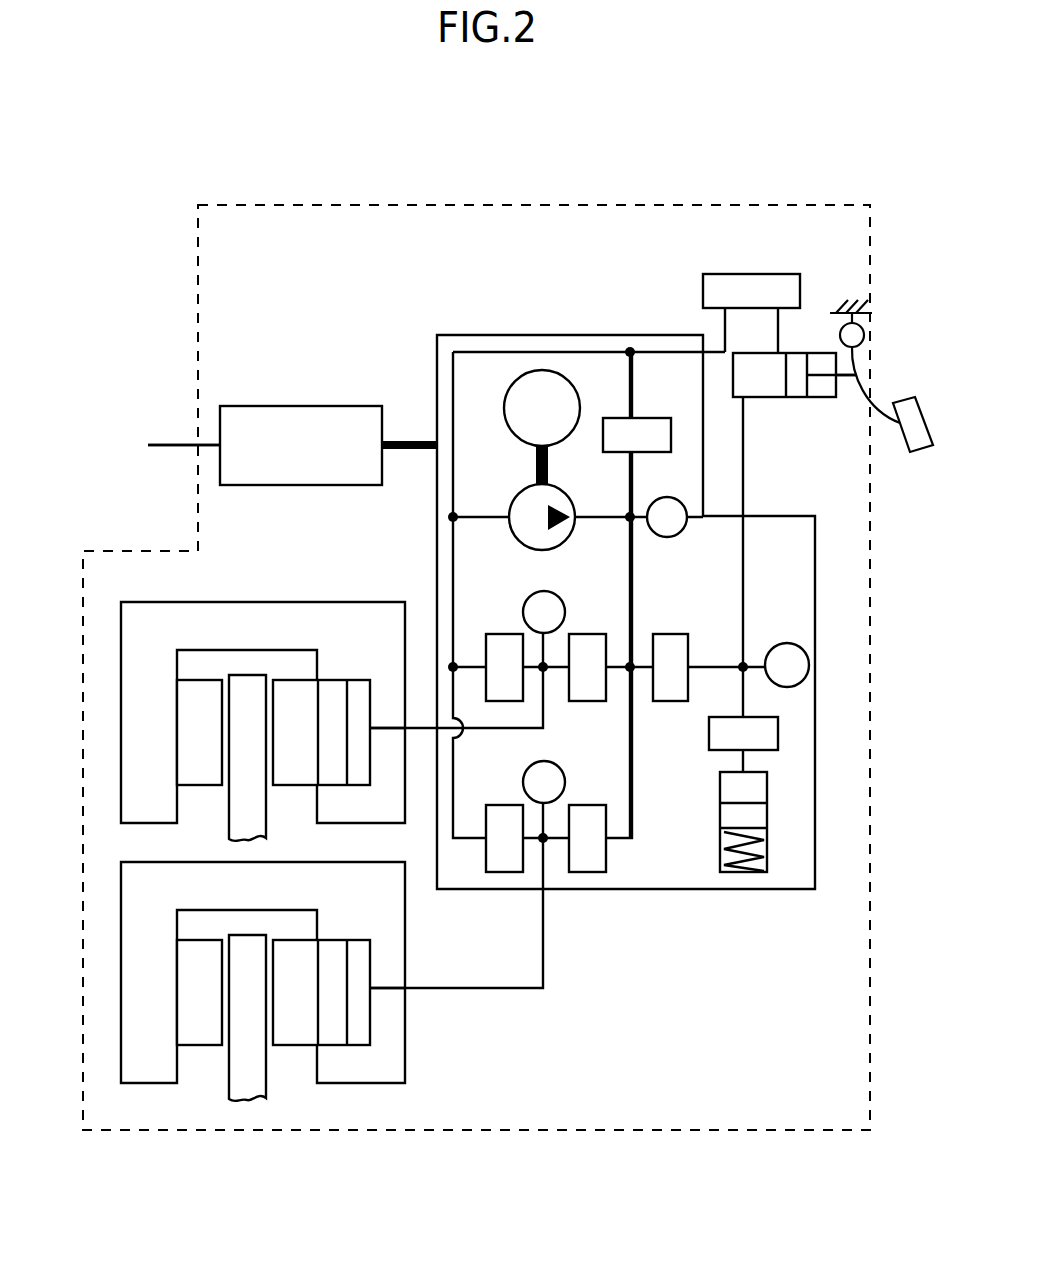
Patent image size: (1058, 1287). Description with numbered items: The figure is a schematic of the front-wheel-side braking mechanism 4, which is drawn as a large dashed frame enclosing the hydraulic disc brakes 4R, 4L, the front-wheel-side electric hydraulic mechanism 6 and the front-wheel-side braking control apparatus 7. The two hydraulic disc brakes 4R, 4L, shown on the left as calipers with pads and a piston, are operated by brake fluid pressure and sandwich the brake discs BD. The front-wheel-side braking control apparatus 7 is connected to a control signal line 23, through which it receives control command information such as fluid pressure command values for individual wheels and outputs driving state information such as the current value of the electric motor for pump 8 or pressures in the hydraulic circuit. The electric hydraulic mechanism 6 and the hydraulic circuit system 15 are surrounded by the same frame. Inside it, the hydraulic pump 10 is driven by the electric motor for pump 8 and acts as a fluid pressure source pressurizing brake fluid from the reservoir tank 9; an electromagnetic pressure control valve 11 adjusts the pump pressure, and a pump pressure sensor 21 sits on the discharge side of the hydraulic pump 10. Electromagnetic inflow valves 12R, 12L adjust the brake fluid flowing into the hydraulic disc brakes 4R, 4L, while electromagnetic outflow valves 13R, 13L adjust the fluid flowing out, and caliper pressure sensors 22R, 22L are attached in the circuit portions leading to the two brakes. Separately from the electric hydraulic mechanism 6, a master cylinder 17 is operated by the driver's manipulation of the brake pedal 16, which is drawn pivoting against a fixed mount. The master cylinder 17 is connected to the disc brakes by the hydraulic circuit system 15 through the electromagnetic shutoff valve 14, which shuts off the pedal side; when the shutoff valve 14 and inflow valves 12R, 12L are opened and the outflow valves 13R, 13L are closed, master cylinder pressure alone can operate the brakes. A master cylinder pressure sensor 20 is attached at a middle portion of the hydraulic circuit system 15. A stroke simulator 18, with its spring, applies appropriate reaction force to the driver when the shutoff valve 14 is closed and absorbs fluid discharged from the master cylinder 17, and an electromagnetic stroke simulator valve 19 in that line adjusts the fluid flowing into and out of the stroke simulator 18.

The front-wheel-side braking mechanism 4 is at (547, 203).
The front-wheel-side electric hydraulic mechanism 6 is at (559, 333).
The front-wheel-side braking control apparatus 7 is at (300, 418).
The electric motor for pump 8 is at (516, 436).
The reservoir tank 9 is at (749, 285).
The hydraulic pump 10 is at (522, 533).
The electromagnetic pressure control valve 11 is at (647, 420).
The electromagnetic inflow valve 12R is at (592, 646).
The electromagnetic inflow valve 12L is at (592, 814).
The electromagnetic outflow valve 13R is at (502, 646).
The electromagnetic outflow valve 13L is at (502, 814).
The electromagnetic shutoff valve 14 is at (672, 646).
The hydraulic circuit system 15 is at (815, 603).
The brake pedal 16 is at (862, 388).
The master cylinder 17 is at (822, 392).
The stroke simulator 18 is at (767, 813).
The electromagnetic stroke simulator valve 19 is at (778, 730).
The master cylinder pressure sensor 20 is at (798, 673).
The pump pressure sensor 21 is at (682, 528).
The caliper pressure sensor 22R is at (553, 595).
The caliper pressure sensor 22L is at (553, 765).
The control signal line 23 is at (161, 448).
The hydraulic disc brake 4R is at (118, 654).
The hydraulic disc brake 4L is at (118, 937).
The brake disc BD is at (247, 675).